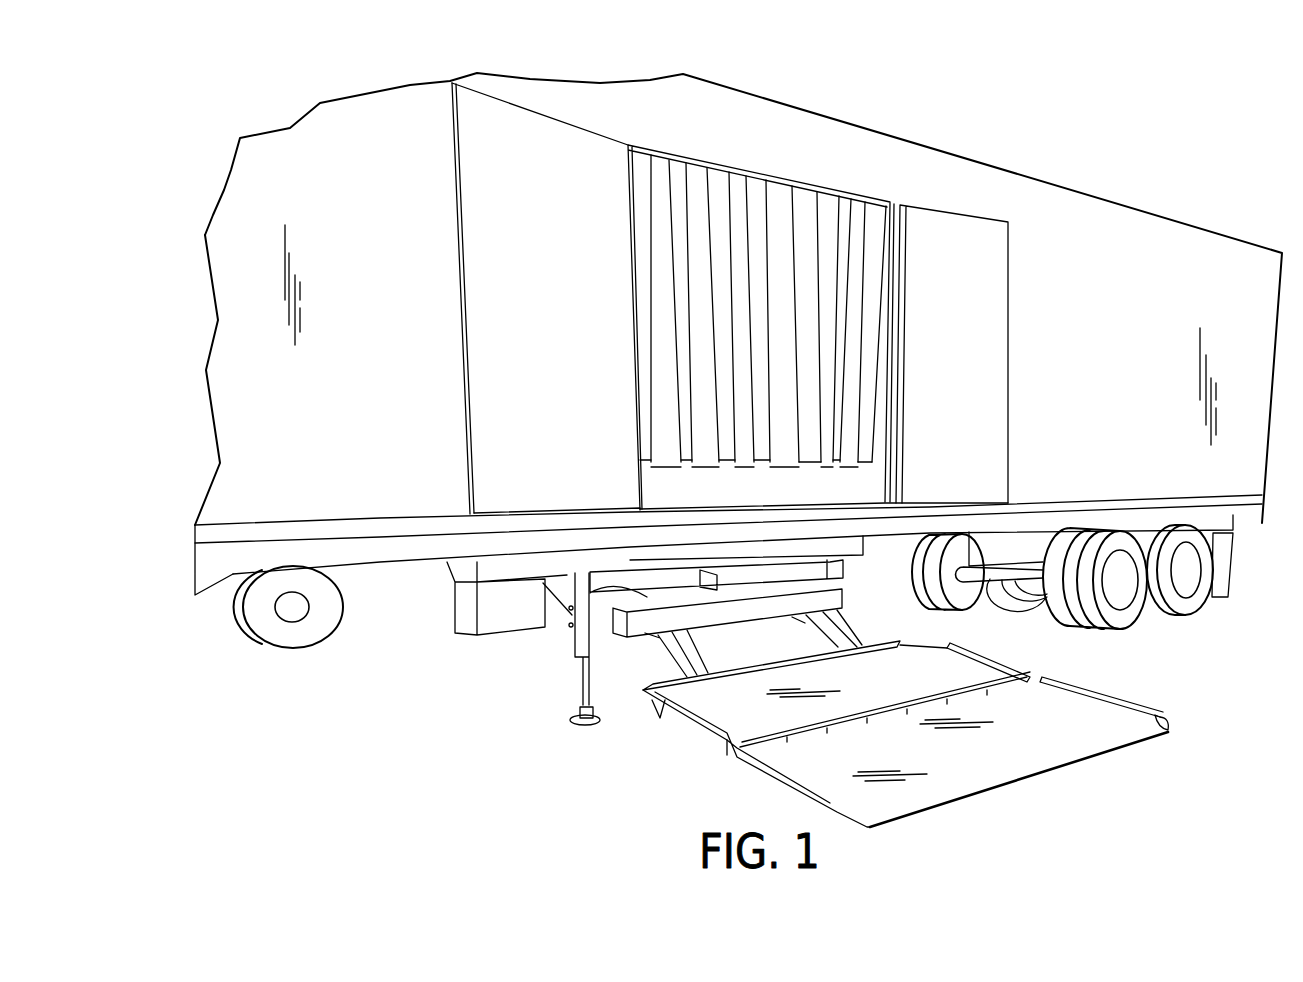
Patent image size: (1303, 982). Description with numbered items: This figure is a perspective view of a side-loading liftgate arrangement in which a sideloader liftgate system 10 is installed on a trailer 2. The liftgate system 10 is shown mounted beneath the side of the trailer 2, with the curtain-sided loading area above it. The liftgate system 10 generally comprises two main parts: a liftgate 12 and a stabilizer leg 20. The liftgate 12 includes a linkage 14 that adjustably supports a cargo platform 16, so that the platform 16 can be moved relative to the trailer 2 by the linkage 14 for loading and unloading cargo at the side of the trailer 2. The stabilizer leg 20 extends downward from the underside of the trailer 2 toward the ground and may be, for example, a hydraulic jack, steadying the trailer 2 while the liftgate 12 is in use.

The trailer 2 is at (1144, 369).
The sideloader liftgate system 10 is at (602, 437).
The liftgate 12 is at (905, 734).
The linkage 14 is at (843, 604).
The cargo platform 16 is at (940, 751).
The stabilizer leg 20 is at (570, 642).